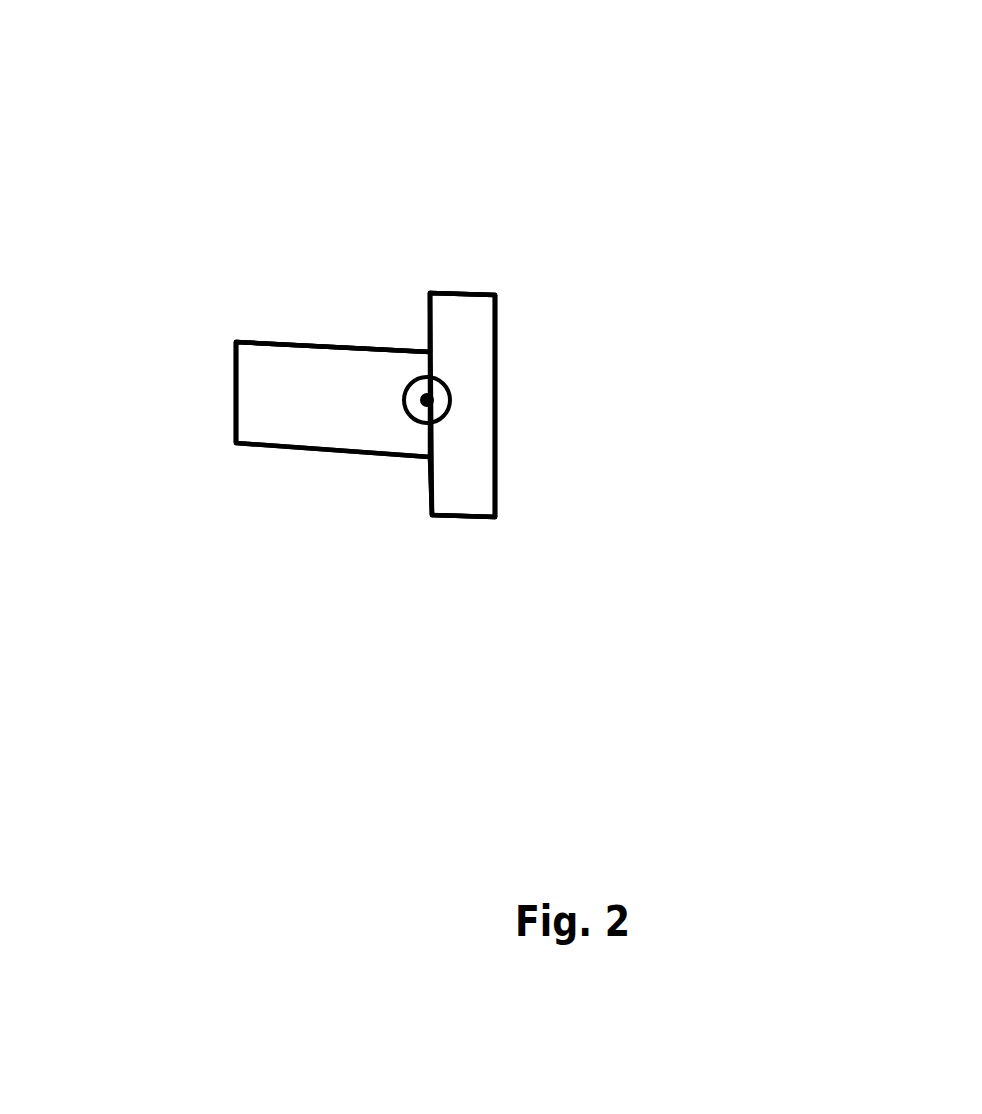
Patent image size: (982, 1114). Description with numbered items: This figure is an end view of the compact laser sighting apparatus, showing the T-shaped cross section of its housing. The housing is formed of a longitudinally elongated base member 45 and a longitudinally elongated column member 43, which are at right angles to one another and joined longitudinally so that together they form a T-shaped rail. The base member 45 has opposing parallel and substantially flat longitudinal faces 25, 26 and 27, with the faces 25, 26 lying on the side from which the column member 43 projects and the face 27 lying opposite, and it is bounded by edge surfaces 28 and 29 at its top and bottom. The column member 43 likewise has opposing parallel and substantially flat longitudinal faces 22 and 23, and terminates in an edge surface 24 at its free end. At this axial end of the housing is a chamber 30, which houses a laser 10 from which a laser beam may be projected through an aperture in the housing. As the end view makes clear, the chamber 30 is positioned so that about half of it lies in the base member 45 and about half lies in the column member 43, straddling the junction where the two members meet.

The laser 10 is at (433, 402).
The longitudinal face 22 is at (293, 452).
The longitudinal face 23 is at (262, 340).
The edge surface 24 is at (236, 403).
The longitudinal face 25 is at (428, 312).
The longitudinal face 26 is at (430, 483).
The longitudinal face 27 is at (495, 487).
The edge surface 28 is at (472, 523).
The edge surface 29 is at (473, 288).
The chamber 30 is at (448, 395).
The column member 43 is at (308, 380).
The base member 45 is at (473, 318).